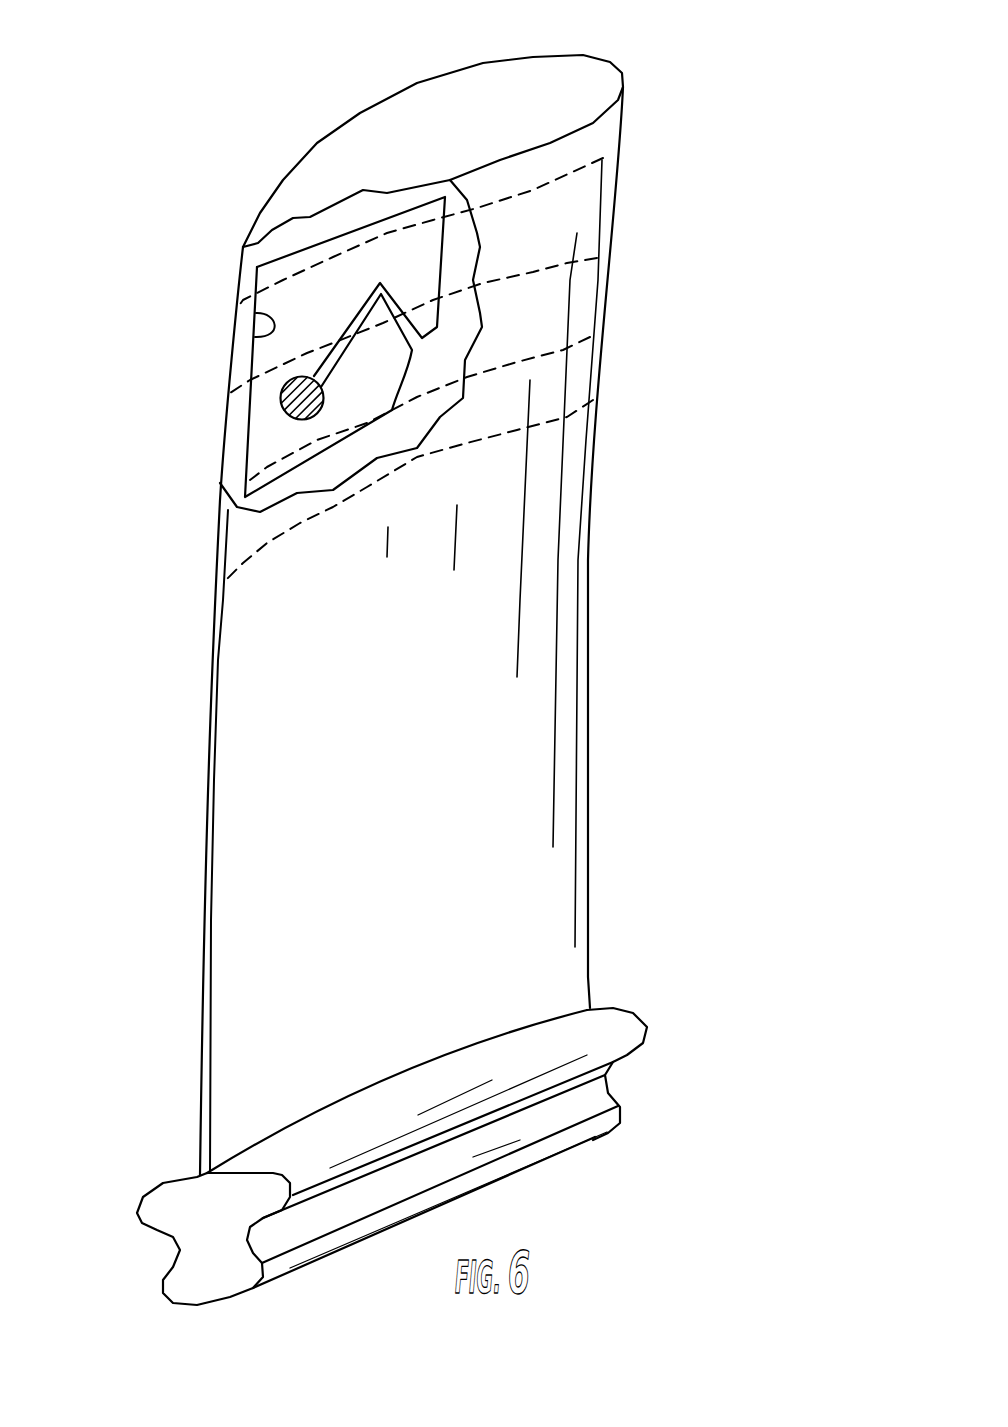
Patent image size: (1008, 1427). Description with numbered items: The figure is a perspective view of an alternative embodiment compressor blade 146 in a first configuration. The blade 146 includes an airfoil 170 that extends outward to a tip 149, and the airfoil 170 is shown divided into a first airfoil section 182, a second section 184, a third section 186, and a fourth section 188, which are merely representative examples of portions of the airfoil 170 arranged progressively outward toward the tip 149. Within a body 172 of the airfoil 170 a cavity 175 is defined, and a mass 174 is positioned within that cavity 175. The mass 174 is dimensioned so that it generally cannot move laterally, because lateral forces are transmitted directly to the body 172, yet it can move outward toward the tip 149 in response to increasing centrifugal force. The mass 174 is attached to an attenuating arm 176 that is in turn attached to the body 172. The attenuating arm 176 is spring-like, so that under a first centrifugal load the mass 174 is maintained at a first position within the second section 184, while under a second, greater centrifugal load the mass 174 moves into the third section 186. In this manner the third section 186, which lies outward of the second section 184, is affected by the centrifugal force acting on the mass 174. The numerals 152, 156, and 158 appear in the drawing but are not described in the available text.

The compressor blade 146 is at (152, 890).
The tip 149 is at (566, 72).
The airfoil body 152 is at (478, 779).
The trailing edge 156 is at (587, 720).
The leading edge 158 is at (205, 737).
The airfoil 170 is at (726, 424).
The body 172 is at (540, 578).
The mass 174 is at (282, 415).
The cavity 175 is at (273, 333).
The attenuating arm 176 is at (403, 293).
The first airfoil section 182 is at (578, 377).
The second section 184 is at (580, 302).
The third section 186 is at (593, 213).
The fourth section 188 is at (604, 138).